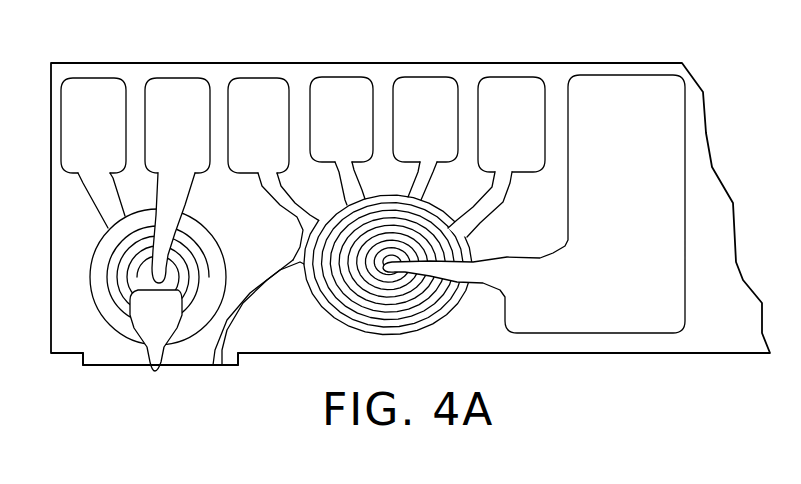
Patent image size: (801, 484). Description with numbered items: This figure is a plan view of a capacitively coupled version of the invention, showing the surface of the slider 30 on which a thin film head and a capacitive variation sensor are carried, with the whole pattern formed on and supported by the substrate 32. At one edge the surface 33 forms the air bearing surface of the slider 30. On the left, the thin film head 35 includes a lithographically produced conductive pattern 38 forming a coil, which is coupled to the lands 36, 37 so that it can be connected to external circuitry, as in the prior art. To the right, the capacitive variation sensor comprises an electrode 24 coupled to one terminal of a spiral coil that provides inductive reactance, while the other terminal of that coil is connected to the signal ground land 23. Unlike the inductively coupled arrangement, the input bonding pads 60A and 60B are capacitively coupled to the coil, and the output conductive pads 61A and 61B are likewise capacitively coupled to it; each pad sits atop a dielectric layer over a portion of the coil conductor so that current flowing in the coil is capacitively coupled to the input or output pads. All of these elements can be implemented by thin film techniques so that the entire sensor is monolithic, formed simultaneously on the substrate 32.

The signal ground land 23 is at (602, 80).
The electrode 24 is at (220, 366).
The slider 30 is at (738, 95).
The substrate 32 is at (740, 332).
The air bearing surface 33 is at (103, 366).
The thin film head 35 is at (122, 295).
The land 36 is at (88, 82).
The land 37 is at (172, 82).
The conductive pattern 38 is at (208, 227).
The input bonding pad 60A is at (253, 82).
The input bonding pad 60B is at (337, 82).
The output conductive pad 61A is at (408, 82).
The output conductive pad 61B is at (505, 82).